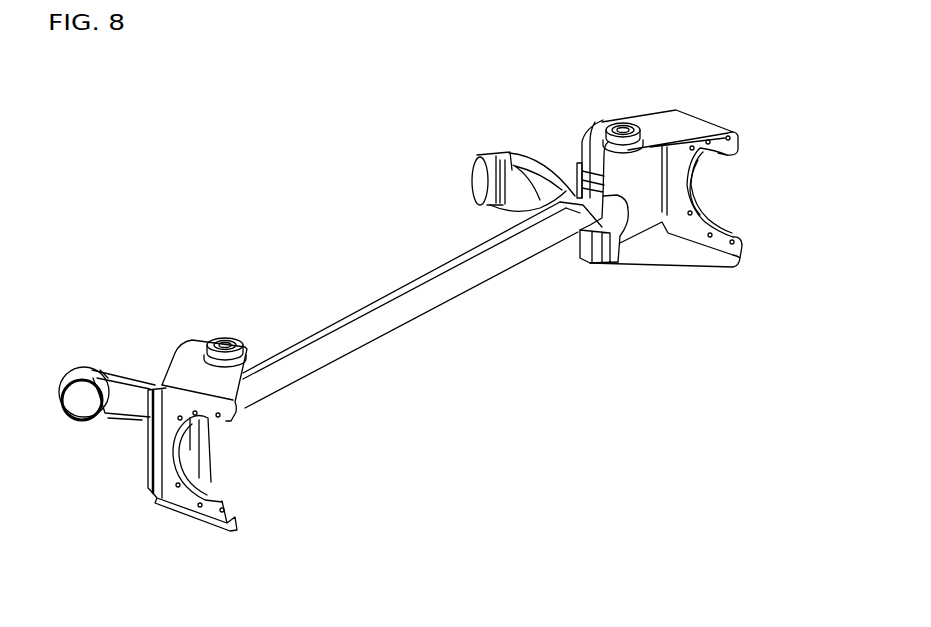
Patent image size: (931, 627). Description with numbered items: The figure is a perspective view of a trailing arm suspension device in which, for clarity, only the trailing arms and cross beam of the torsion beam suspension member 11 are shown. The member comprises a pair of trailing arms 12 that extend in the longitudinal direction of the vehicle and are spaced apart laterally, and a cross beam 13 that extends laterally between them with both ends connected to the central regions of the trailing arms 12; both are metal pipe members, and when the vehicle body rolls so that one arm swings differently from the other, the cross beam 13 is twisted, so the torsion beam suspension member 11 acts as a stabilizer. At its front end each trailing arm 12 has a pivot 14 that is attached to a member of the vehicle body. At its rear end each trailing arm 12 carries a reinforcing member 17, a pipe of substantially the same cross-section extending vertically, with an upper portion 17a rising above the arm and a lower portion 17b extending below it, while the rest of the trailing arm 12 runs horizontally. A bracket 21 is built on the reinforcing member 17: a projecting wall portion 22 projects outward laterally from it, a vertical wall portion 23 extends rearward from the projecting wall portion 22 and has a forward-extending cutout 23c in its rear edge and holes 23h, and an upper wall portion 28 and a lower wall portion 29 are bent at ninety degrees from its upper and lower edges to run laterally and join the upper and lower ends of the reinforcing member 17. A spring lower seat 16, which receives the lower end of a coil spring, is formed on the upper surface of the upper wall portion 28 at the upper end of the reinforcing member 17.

The torsion beam suspension member 11 is at (278, 266).
The trailing arm 12 is at (506, 204).
The cross beam 13 is at (383, 292).
The pivot 14 is at (470, 178).
The spring lower seat 16 is at (626, 123).
The reinforcing member 17 is at (584, 169).
The upper portion 17a is at (590, 151).
The lower portion 17b is at (577, 262).
The bracket 21 is at (735, 84).
The projecting wall portion 22 is at (678, 196).
The vertical wall portion 23 is at (736, 248).
The cutout 23c is at (720, 225).
The mounting hole 23h is at (738, 153).
The upper wall portion 28 is at (661, 120).
The lower wall portion 29 is at (671, 266).